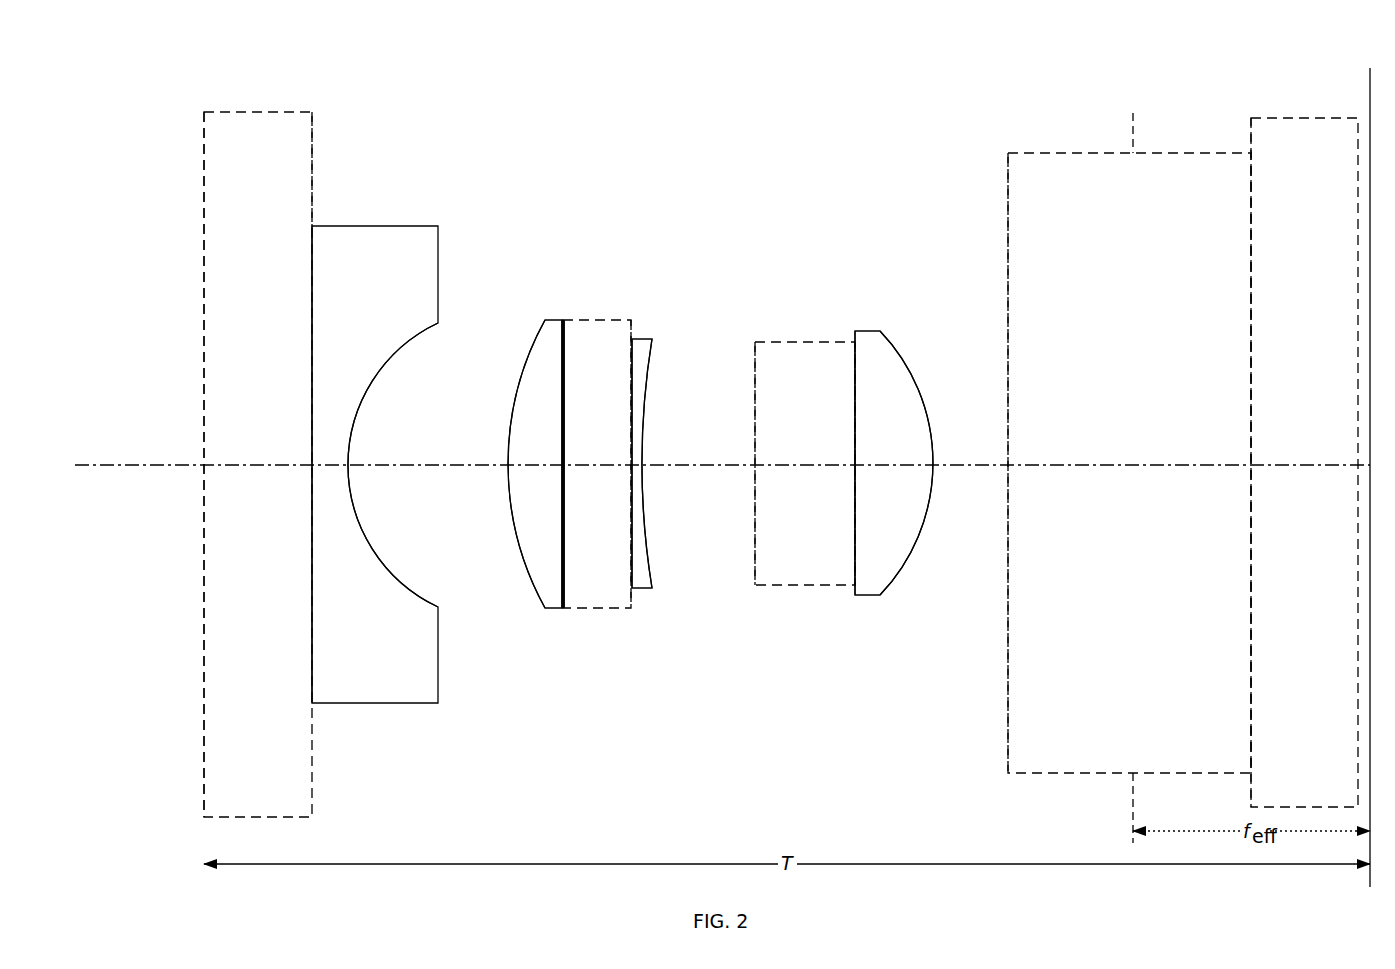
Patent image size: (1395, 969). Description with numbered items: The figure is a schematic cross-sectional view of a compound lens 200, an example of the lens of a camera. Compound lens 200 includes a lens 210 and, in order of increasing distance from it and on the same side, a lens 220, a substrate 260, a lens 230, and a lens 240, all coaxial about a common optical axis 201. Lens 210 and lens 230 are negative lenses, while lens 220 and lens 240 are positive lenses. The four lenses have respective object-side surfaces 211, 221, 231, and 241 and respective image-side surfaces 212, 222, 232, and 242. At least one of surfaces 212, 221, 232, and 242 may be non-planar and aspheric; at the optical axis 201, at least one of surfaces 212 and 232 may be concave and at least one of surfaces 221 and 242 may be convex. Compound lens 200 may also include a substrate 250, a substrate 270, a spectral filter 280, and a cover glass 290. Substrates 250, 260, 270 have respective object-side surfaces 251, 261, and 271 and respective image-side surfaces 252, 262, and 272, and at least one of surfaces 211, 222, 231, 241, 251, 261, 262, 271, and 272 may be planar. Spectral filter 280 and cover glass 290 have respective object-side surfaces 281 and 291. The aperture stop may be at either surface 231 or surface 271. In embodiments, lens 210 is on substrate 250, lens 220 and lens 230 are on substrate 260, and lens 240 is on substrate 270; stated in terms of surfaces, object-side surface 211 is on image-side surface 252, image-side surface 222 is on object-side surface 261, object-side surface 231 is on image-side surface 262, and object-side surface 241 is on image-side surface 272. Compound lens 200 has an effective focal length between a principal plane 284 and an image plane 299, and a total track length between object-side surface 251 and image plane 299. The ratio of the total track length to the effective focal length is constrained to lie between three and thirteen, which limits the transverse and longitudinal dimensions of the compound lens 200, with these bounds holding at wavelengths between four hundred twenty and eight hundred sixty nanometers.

The compound lens 200 is at (157, 57).
The optical axis 201 is at (106, 463).
The lens 210 is at (424, 696).
The object-side surface 211 is at (312, 277).
The image-side surface 212 is at (357, 414).
The lens 220 is at (554, 503).
The object-side surface 221 is at (530, 578).
The image-side surface 222 is at (565, 340).
The lens 230 is at (648, 543).
The object-side surface 231 is at (630, 584).
The image-side surface 232 is at (648, 380).
The lens 240 is at (900, 503).
The object-side surface 241 is at (855, 335).
The image-side surface 242 is at (917, 543).
The substrate 250 is at (274, 808).
The object-side surface 251 is at (204, 231).
The image-side surface 252 is at (312, 176).
The substrate 260 is at (615, 573).
The object-side surface 261 is at (563, 411).
The image-side surface 262 is at (633, 336).
The substrate 270 is at (822, 575).
The object-side surface 271 is at (754, 503).
The image-side surface 272 is at (857, 578).
The spectral filter 280 is at (1204, 765).
The object-side surface 281 is at (1008, 182).
The principal plane 284 is at (1133, 133).
The cover glass 290 is at (1322, 798).
The object-side surface 291 is at (1251, 136).
The image plane 299 is at (1370, 100).